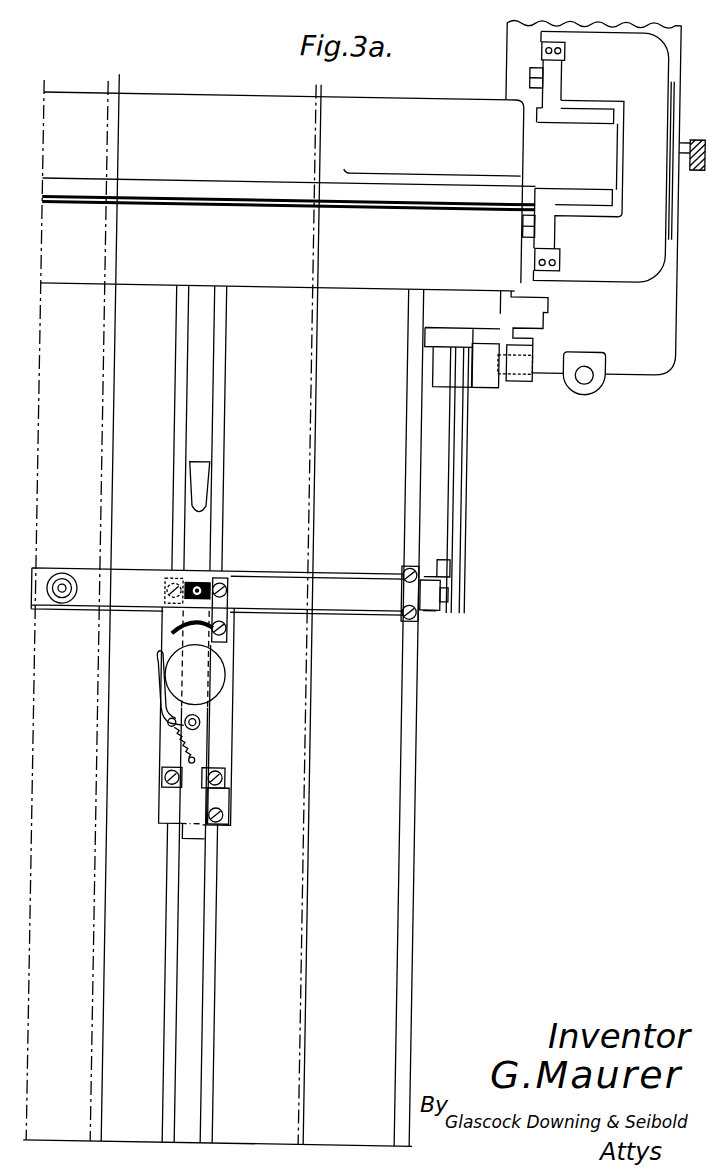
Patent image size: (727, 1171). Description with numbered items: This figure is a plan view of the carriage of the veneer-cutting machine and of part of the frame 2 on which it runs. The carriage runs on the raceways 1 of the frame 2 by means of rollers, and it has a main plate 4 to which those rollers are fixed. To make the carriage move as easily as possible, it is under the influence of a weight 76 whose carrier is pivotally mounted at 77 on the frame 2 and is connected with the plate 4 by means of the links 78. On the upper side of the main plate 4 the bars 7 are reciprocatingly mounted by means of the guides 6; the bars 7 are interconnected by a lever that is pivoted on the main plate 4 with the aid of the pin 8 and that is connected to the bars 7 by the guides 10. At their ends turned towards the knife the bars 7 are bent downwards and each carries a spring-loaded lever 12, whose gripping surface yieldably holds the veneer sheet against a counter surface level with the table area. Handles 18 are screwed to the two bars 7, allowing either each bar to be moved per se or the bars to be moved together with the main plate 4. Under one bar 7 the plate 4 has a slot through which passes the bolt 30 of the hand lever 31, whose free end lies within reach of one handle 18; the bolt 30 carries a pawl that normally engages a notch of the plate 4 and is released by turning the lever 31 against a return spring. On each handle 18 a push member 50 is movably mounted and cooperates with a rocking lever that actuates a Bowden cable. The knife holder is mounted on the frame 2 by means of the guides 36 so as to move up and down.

The raceways 1 is at (228, 854).
The frame 2 is at (638, 362).
The main plate 4 is at (266, 574).
The guides 6 is at (173, 583).
The bars 7 is at (197, 520).
The pin 8 is at (70, 572).
The guides 10 is at (198, 580).
The spring-loaded lever 12 is at (198, 476).
The handles 18 is at (230, 673).
The bolt 30 is at (216, 715).
The hand lever 31 is at (168, 653).
The guides 36 is at (575, 183).
The push member 50 is at (181, 631).
The weight 76 is at (454, 328).
The pivot of weight carrier 77 is at (507, 368).
The links 78 is at (444, 597).